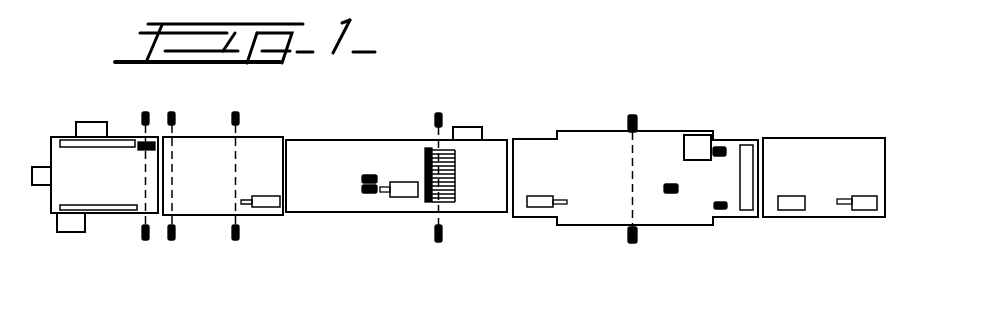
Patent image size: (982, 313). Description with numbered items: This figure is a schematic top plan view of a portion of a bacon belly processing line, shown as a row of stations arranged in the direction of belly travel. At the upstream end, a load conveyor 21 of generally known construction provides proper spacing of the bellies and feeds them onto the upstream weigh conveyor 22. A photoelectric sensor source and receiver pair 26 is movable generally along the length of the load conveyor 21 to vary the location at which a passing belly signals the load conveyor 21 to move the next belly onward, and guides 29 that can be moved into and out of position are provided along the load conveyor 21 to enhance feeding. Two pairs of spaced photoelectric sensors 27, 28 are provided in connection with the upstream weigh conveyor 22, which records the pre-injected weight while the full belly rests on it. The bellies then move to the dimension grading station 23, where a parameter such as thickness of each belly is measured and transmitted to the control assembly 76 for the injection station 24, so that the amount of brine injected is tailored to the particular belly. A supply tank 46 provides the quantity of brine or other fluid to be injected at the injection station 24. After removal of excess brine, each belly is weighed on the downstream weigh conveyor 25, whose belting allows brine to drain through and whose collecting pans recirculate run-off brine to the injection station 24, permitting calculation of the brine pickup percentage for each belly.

The load conveyor 21 is at (110, 187).
The upstream weigh conveyor 22 is at (217, 187).
The dimension grading station 23 is at (335, 186).
The injection station 24 is at (610, 188).
The downstream weigh conveyor 25 is at (830, 183).
The photoelectric sensor source and receiver pair 26 is at (142, 119).
The pair of spaced photoelectric sensors 27 is at (176, 119).
The pair of spaced photoelectric sensors 28 is at (240, 119).
The guides 29 is at (65, 142).
The supply tank 46 is at (692, 137).
The control assembly 76 is at (792, 210).